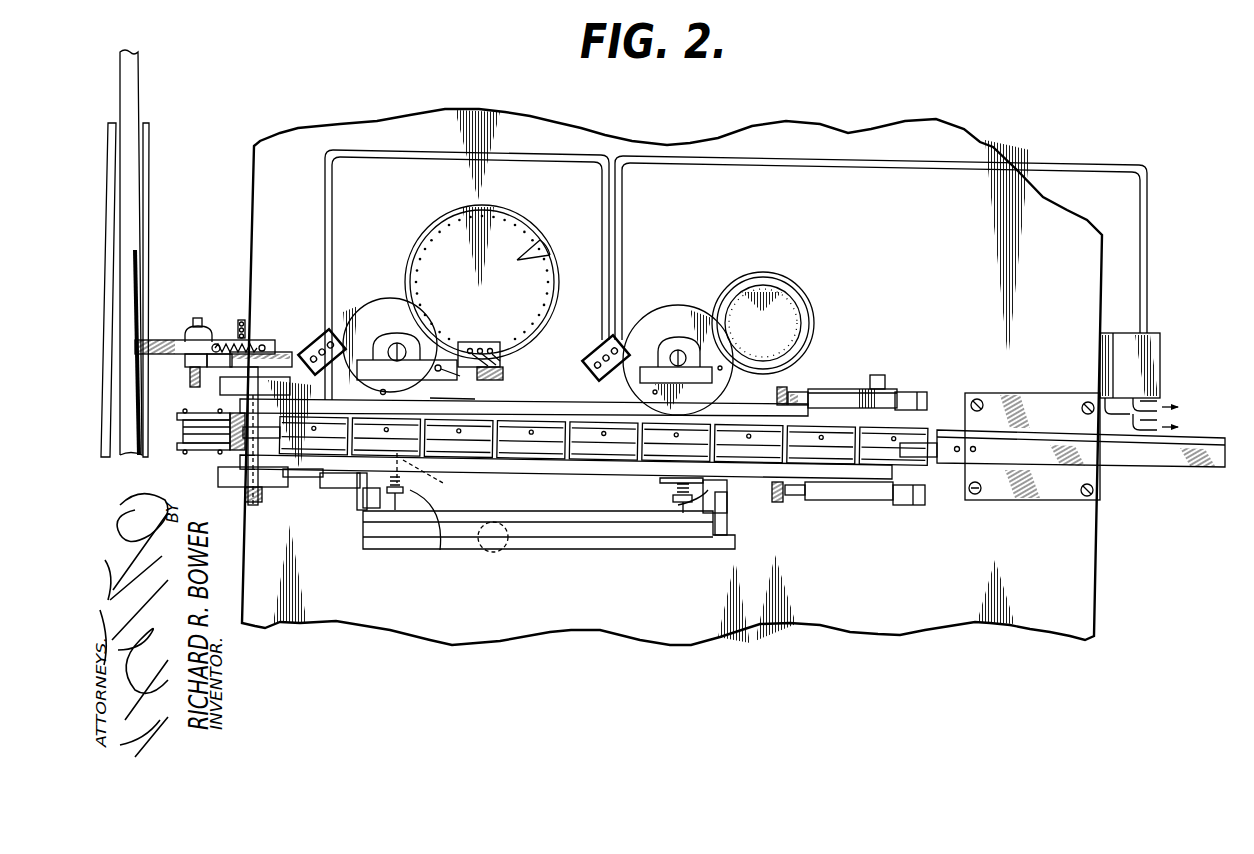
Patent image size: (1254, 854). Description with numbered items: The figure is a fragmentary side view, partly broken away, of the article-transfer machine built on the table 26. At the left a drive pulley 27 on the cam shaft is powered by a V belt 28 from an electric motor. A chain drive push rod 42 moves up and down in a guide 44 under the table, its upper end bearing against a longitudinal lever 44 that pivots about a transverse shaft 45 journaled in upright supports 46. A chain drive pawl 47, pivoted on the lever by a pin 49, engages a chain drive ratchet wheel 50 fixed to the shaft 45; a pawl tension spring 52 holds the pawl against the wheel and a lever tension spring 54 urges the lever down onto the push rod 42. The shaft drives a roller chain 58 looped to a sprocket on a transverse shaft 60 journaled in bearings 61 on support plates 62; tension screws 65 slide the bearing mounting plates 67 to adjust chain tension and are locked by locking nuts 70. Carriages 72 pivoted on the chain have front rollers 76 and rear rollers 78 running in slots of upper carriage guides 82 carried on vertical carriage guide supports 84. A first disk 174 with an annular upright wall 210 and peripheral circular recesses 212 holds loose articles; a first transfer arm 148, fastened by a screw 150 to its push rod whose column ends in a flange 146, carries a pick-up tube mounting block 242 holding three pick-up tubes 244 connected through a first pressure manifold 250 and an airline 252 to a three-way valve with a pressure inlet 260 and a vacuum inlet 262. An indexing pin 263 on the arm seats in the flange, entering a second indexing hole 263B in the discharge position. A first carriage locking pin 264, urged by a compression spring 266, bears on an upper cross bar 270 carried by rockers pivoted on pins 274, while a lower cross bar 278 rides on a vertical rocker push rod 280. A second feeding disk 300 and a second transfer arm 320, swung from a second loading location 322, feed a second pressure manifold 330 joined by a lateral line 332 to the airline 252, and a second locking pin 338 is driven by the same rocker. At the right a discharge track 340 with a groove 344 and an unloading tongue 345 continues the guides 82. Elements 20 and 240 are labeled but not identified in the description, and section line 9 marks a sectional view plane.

The arm 20 is at (162, 333).
The table 26 is at (672, 377).
The drive pulley 27 is at (150, 168).
The V belt 28 is at (126, 97).
The chain drive push rod 42 is at (190, 328).
The lever 44 is at (186, 360).
The transverse horizontal shaft 45 is at (253, 503).
The upright supports 46 is at (292, 386).
The chain drive pawl 47 is at (222, 362).
The pin 49 is at (197, 374).
The chain drive ratchet wheel 50 is at (283, 352).
The pawl tension spring 52 is at (228, 345).
The lever tension spring 54 is at (241, 320).
The roller chain 58 is at (268, 470).
The horizontal transverse shaft 60 is at (877, 375).
The bearings 61 is at (905, 395).
The support plates 62 is at (912, 400).
The tension screws 65 is at (782, 387).
The bearing mounting plate 67 is at (885, 389).
The locking nuts 70 is at (805, 392).
The carriages 72 is at (182, 452).
The front rollers 76 is at (345, 470).
The rear rollers 78 is at (305, 465).
The upper carriage guides 82 is at (577, 412).
The carriage guide supports 84 is at (360, 505).
The flange 146 is at (390, 298).
The first transfer arm 148 is at (347, 322).
The screw 150 is at (395, 340).
The first disk 174 is at (500, 204).
The annular upright wall 210 is at (538, 258).
The circular recesses 212 is at (517, 254).
The block 240 is at (478, 339).
The pick-up tube mounting block 242 is at (482, 380).
The pick-up tubes 244 is at (503, 372).
The first pressure manifold 250 is at (313, 337).
The airline 252 is at (333, 184).
The first inlet 260 is at (1160, 404).
The second inlet 262 is at (1103, 400).
The indexing pin 263 is at (438, 372).
The second indexing hole 263B is at (451, 405).
The first carriage locking pin 264 is at (441, 481).
The compression spring 266 is at (433, 529).
The upper cross bar 270 is at (573, 515).
The pins 274 is at (386, 497).
The lower cross bar 278 is at (598, 548).
The rocker push rod 280 is at (490, 552).
The second feeding disk 300 is at (776, 270).
The second transfer arm 320 is at (645, 330).
The second loading location 322 is at (763, 356).
The second pressure manifold 330 is at (595, 347).
The lateral line 332 is at (614, 208).
The second locking pin 338 is at (678, 506).
The discharge track 340 is at (1178, 468).
The groove 344 is at (1018, 440).
The unloading tongue 345 is at (940, 440).
The section line 9 is at (523, 333).